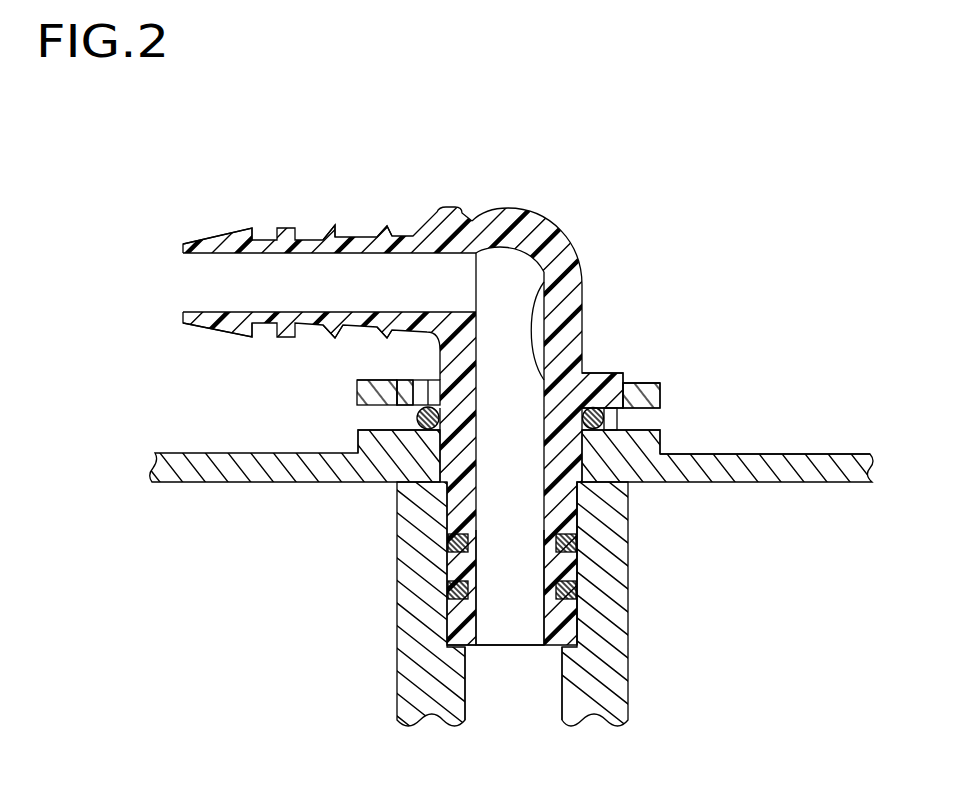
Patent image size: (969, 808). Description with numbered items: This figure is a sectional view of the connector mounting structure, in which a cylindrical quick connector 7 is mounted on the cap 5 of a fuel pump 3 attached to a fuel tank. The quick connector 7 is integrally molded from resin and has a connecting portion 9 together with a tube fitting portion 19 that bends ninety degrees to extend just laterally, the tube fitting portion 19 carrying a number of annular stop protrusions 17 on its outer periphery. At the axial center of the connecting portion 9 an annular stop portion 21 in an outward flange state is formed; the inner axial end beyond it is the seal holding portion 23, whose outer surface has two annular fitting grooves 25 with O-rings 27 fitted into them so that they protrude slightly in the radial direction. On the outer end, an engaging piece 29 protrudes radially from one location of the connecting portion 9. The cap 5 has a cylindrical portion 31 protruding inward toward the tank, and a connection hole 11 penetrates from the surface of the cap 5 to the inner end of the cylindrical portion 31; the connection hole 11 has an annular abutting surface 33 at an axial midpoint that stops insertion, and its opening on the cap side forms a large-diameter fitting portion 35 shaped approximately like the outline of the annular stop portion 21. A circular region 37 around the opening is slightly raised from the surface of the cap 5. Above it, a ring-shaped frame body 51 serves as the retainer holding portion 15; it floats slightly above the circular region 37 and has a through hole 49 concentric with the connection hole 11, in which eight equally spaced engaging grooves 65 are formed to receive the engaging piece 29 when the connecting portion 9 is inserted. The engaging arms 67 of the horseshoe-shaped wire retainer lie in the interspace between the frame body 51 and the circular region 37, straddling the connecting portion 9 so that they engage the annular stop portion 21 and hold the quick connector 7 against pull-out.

The fuel pump 3 is at (777, 419).
The cap 5 is at (717, 452).
The quick connector 7 is at (606, 250).
The connecting portion 9 is at (596, 331).
The connection hole 11 is at (466, 690).
The retainer holding portion 15 is at (667, 361).
The annular stop protrusions 17 is at (337, 233).
The tube fitting portion 19 is at (240, 214).
The annular stop portion 21 is at (395, 482).
The seal holding portion 23 is at (590, 500).
The annular fitting grooves 25 is at (472, 543).
The O-rings 27 is at (455, 545).
The engaging piece 29 is at (556, 248).
The cylindrical portion 31 is at (410, 598).
The annular abutting surface 33 is at (478, 648).
The fitting portion 35 is at (586, 486).
The circular region 37 is at (653, 430).
The through hole 49 is at (433, 380).
The frame body 51 is at (357, 398).
The engaging grooves 65 is at (397, 380).
The engaging arms 67 is at (602, 408).